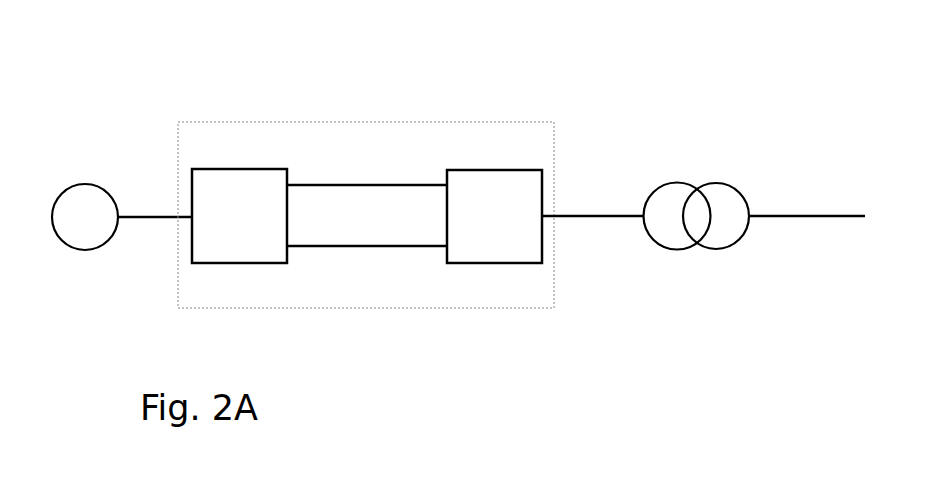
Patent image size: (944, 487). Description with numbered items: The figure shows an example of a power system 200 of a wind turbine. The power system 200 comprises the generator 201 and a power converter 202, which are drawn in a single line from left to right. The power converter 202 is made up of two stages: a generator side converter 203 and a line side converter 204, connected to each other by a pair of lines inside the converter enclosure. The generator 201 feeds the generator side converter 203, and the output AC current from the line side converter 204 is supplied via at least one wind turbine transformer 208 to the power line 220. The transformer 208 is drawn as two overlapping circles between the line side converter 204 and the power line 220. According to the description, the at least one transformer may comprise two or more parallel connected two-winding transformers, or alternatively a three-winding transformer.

The power system 200 is at (237, 61).
The generator 201 is at (75, 183).
The power converter 202 is at (370, 107).
The generator side converter 203 is at (232, 157).
The line side converter 204 is at (490, 160).
The wind turbine transformer 208 is at (690, 178).
The power line 220 is at (843, 207).